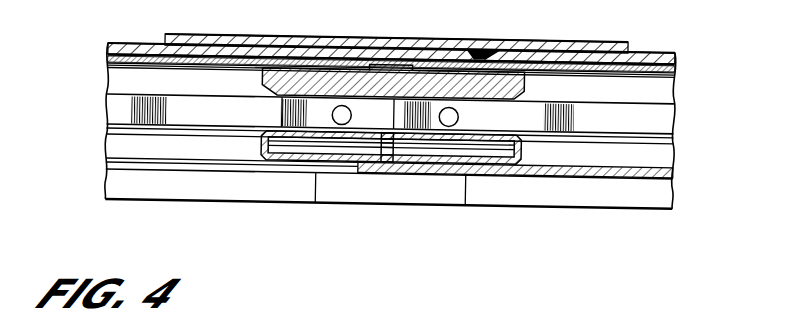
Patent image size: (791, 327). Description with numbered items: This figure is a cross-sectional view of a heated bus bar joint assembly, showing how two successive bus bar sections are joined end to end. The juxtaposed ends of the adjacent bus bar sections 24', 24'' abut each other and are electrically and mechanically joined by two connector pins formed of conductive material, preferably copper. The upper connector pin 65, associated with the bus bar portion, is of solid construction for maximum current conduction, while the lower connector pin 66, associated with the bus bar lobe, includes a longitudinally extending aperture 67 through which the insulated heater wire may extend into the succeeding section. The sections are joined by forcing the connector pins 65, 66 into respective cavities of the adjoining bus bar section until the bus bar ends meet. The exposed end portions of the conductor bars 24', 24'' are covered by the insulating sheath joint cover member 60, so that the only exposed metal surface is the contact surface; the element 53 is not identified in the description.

The cover plate 53 is at (137, 44).
The insulating sheath joint cover member 60 is at (450, 42).
The upper connector pin 65 is at (297, 80).
The bus bar section 24' is at (249, 137).
The adjacent bus bar section 24'' is at (534, 142).
The lower connector pin 66 is at (308, 153).
The longitudinally extending aperture 67 is at (492, 148).